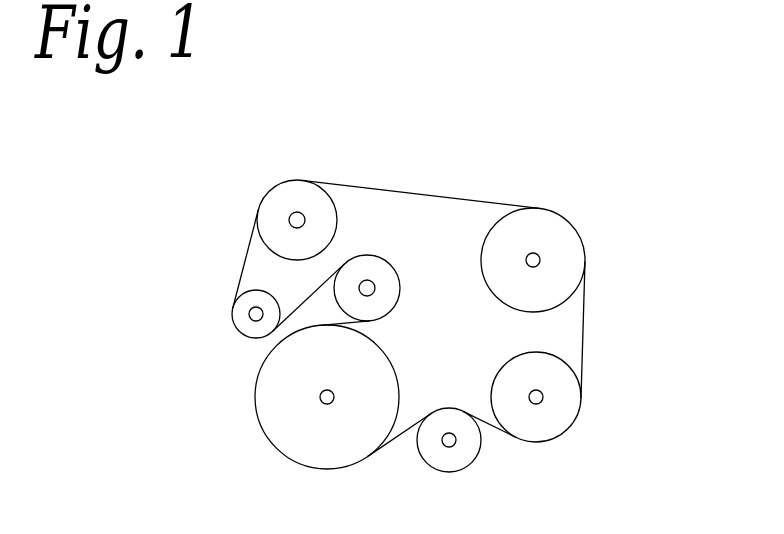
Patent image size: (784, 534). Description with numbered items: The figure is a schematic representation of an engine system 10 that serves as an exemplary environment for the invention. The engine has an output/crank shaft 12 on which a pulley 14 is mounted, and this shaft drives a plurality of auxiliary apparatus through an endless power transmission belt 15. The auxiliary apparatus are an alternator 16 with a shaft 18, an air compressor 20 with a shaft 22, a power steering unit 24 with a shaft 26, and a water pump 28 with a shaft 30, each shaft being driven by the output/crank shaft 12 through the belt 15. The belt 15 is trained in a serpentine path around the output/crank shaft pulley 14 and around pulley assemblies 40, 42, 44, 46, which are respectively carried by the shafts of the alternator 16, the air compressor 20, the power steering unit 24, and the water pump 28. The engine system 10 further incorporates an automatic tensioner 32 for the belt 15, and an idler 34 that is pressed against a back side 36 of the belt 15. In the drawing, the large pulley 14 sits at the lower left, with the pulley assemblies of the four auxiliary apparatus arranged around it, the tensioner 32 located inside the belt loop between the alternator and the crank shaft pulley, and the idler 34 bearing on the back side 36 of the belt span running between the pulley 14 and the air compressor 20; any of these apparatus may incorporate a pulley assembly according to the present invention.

The engine system 10 is at (541, 165).
The output/crank shaft 12 is at (320, 397).
The pulley 14 is at (267, 437).
The endless power transmission belt 15 is at (418, 192).
The alternator 16 is at (232, 316).
The shaft 18 is at (253, 320).
The air compressor 20 is at (573, 420).
The shaft 22 is at (540, 403).
The power steering unit 24 is at (572, 227).
The shaft 26 is at (540, 260).
The water pump 28 is at (280, 182).
The shaft 30 is at (289, 220).
The automatic tensioner 32 is at (398, 279).
The idler 34 is at (470, 466).
The back side 36 is at (403, 435).
The pulley assembly 40 is at (250, 289).
The pulley assembly 42 is at (567, 397).
The pulley assembly 44 is at (560, 278).
The pulley assembly 46 is at (315, 200).